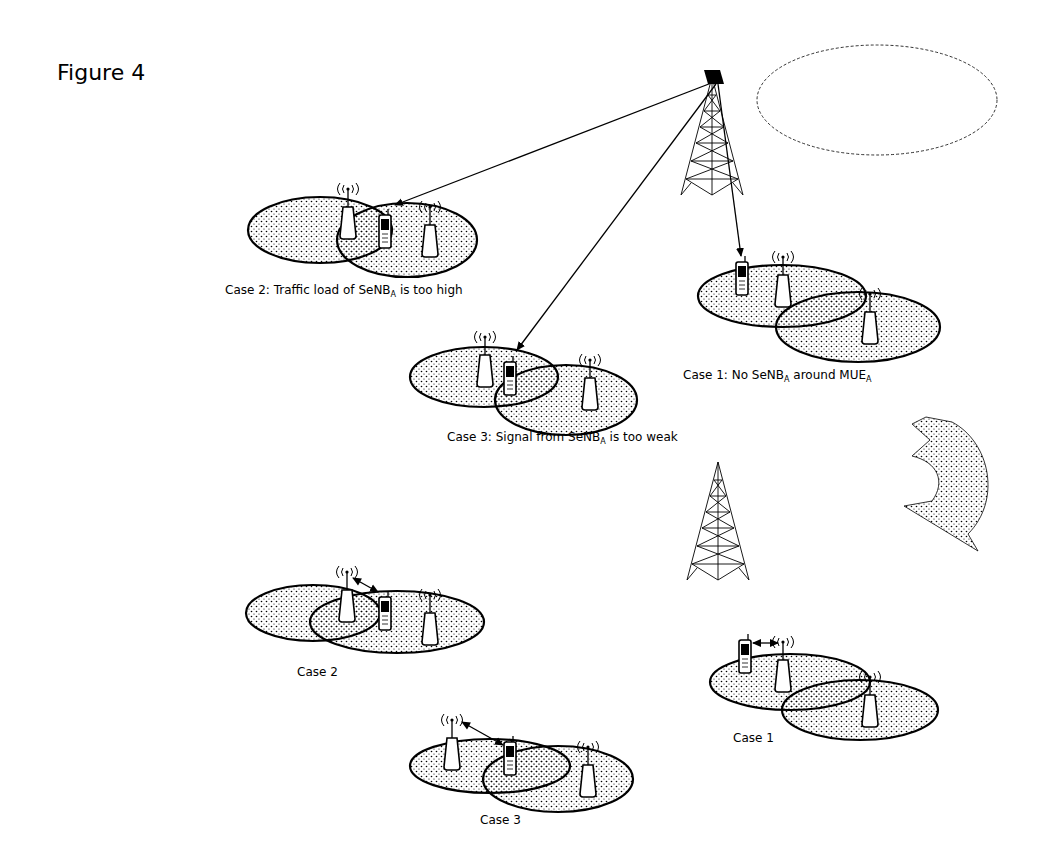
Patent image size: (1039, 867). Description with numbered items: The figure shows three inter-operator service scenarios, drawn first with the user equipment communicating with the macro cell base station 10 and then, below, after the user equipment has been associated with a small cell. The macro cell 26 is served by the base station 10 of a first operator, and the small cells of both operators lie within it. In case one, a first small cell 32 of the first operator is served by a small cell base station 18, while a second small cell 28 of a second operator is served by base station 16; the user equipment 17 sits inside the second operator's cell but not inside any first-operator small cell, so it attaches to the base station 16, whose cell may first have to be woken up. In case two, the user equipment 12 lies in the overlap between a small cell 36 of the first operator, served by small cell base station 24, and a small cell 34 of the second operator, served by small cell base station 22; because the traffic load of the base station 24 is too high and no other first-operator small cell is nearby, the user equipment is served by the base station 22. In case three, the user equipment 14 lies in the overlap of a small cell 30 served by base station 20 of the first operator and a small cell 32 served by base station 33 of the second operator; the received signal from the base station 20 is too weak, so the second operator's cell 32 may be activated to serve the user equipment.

The macro cell base station 10 is at (722, 66).
The user equipment 12 is at (384, 224).
The user equipment 14 is at (485, 385).
The base station 16 is at (795, 266).
The user equipment 17 is at (730, 262).
The small cell base station 18 is at (878, 305).
The base station 20 is at (596, 381).
The small cell base station 22 is at (337, 167).
The small cell base station 24 is at (434, 232).
The macro cell 26 is at (948, 201).
The small cell 28 is at (723, 308).
The small cell 30 is at (578, 360).
The small cell 32 is at (921, 327).
The base station 33 is at (470, 345).
The small cell 34 is at (266, 202).
The small cell 36 is at (458, 225).